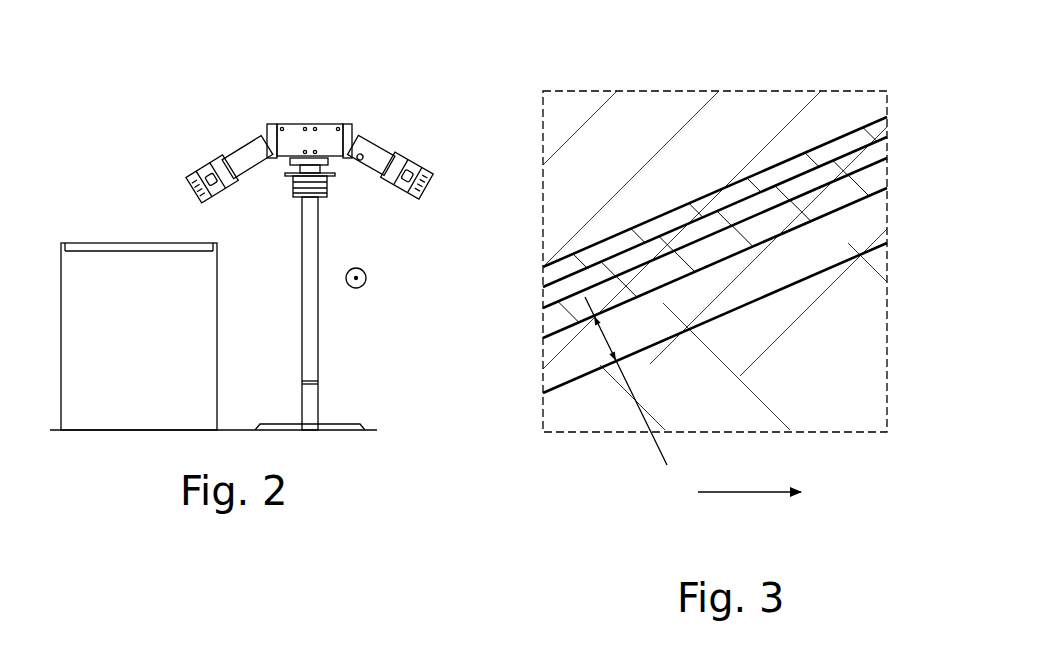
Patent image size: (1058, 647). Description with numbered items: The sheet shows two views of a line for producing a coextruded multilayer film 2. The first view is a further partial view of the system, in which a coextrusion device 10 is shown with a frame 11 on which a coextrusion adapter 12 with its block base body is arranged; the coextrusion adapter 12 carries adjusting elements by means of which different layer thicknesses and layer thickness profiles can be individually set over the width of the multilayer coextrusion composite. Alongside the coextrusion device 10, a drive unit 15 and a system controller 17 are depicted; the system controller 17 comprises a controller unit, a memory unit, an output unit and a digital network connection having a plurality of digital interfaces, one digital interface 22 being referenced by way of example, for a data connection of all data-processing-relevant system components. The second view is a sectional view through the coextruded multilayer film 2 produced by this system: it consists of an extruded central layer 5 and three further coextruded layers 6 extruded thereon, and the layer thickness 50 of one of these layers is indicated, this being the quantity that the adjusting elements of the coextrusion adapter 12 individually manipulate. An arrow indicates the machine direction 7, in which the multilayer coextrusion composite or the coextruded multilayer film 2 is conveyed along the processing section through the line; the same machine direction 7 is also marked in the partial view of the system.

In FIG. 3, the coextruded multilayer film 2 is at (813, 81).
In FIG. 3, the extruded central layer 5 is at (870, 232).
In FIG. 3, the further coextruded layers 6 is at (540, 370).
In FIG. 2, the machine direction 7 is at (367, 275).
In FIG. 3, the machine direction 7 is at (762, 496).
In FIG. 2, the coextrusion device 10 is at (352, 121).
In FIG. 2, the frame 11 is at (320, 240).
In FIG. 2, the coextrusion adapter 12 is at (317, 123).
In FIG. 2, the drive unit 15 is at (409, 135).
In FIG. 2, the system controller 17 is at (157, 352).
In FIG. 2, the digital interface 22 is at (242, 206).
In FIG. 3, the layer thickness 50 is at (650, 438).